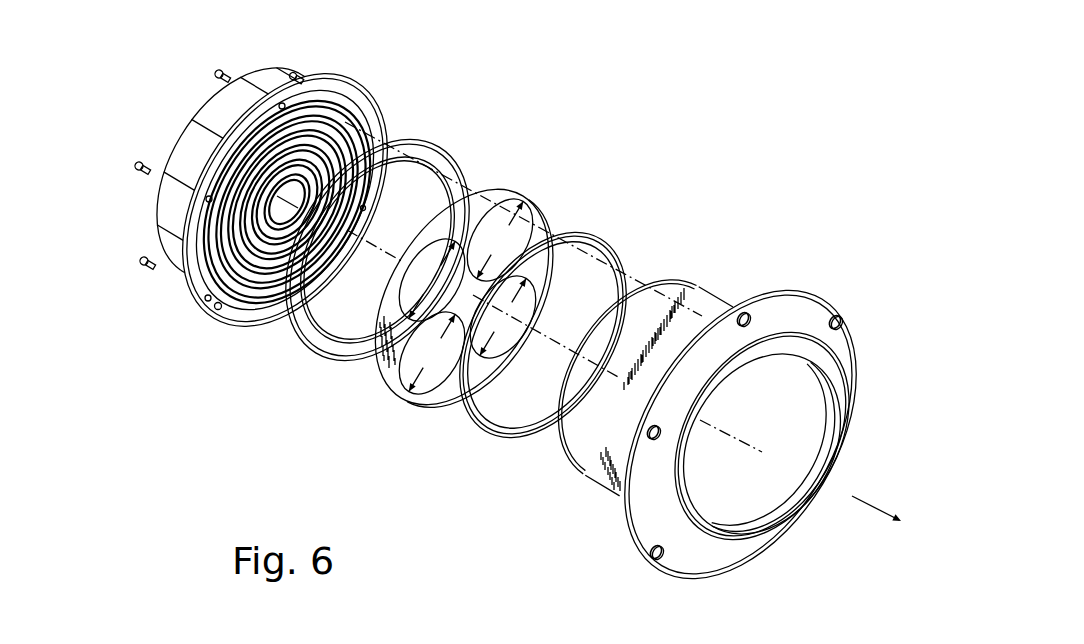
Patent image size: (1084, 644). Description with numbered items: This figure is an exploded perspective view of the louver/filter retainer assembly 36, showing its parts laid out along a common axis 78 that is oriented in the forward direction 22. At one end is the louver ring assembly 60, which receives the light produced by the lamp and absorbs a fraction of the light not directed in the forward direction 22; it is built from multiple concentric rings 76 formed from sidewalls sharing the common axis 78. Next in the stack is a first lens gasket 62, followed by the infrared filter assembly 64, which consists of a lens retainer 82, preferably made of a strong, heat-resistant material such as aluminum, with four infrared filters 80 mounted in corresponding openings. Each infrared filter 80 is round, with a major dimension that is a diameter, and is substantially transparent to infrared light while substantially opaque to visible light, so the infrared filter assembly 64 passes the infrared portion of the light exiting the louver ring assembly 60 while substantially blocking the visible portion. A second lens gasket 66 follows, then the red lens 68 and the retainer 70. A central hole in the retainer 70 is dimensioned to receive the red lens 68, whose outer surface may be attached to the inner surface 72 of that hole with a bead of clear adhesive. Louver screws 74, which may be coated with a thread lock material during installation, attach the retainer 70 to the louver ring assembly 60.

The forward direction 22 is at (852, 496).
The louver/filter retainer assembly 36 is at (567, 86).
The louver ring assembly 60 is at (214, 310).
The first lens gasket 62 is at (307, 340).
The infrared filter assembly 64 is at (392, 391).
The second lens gasket 66 is at (492, 438).
The red lens 68 is at (571, 471).
The retainer 70 is at (627, 537).
The inner surface 72 is at (736, 530).
The louver screws 74 is at (143, 261).
The concentric rings 76 is at (340, 143).
The common axis 78 is at (377, 242).
The infrared filters 80 is at (497, 205).
The lens retainer 82 is at (527, 204).